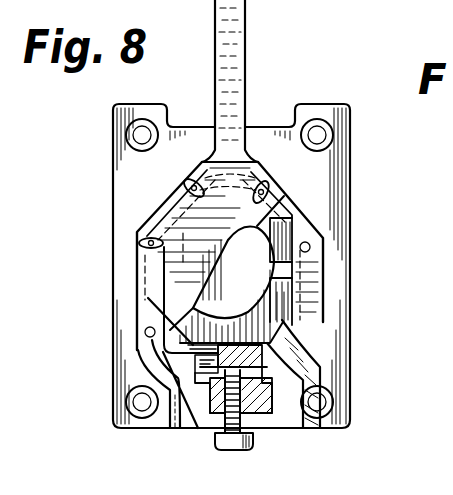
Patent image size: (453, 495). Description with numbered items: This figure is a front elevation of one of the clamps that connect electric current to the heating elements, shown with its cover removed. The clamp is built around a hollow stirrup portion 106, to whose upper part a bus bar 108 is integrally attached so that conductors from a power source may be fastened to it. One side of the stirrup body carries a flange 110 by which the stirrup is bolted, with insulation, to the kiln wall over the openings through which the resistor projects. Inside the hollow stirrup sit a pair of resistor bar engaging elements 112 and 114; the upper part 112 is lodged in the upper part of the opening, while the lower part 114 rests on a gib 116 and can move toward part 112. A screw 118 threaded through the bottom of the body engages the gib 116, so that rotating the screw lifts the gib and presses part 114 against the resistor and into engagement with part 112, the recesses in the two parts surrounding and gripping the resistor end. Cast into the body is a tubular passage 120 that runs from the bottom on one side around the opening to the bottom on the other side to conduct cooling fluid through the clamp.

The hollow stirrup portion 106 is at (318, 290).
The bus bar 108 is at (237, 78).
The flange 110 is at (318, 170).
The clamp or resistor bar engaging element 112 is at (272, 240).
The clamp or resistor bar engaging element 114 is at (273, 312).
The gib 116 is at (270, 346).
The screw 118 is at (233, 438).
The tubular passage 120 is at (148, 280).